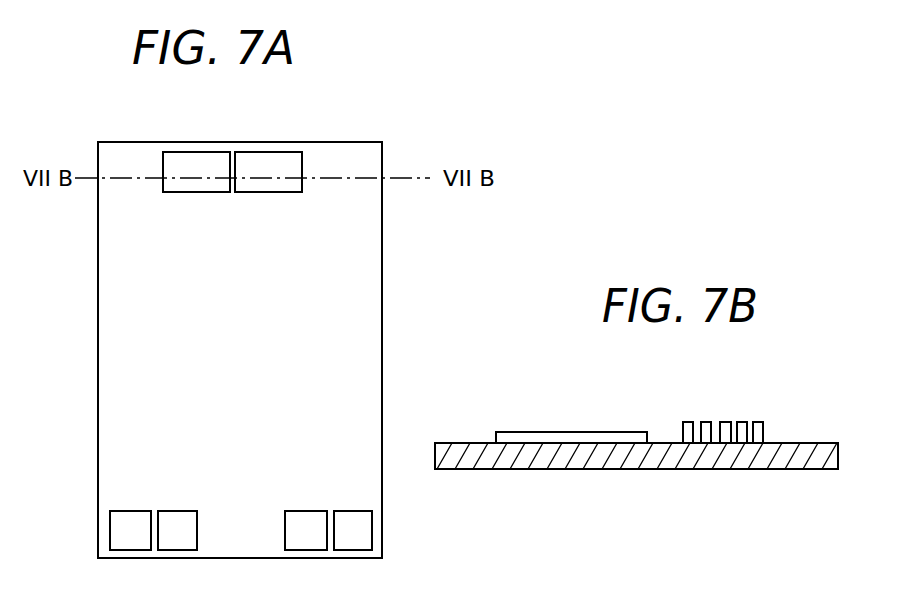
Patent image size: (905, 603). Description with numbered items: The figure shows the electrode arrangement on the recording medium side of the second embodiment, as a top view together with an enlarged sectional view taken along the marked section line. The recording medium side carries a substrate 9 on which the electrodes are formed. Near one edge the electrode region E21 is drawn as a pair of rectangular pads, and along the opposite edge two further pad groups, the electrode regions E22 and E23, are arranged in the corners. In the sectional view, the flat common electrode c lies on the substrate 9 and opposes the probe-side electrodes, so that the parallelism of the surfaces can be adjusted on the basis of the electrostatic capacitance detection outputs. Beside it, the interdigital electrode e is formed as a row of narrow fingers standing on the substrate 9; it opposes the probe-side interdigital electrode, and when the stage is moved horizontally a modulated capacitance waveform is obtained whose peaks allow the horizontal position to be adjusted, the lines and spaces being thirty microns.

In FIG. 7A, the circuit board 9 is at (373, 272).
In FIG. 7B, the circuit board 9 is at (447, 443).
In FIG. 7A, the electronic component E21 is at (330, 138).
In FIG. 7A, the electronic component E22 is at (153, 516).
In FIG. 7A, the electronic component E23 is at (328, 516).
In FIG. 7B, the common electrode c is at (571, 424).
In FIG. 7B, the interdigital electrode e is at (723, 419).